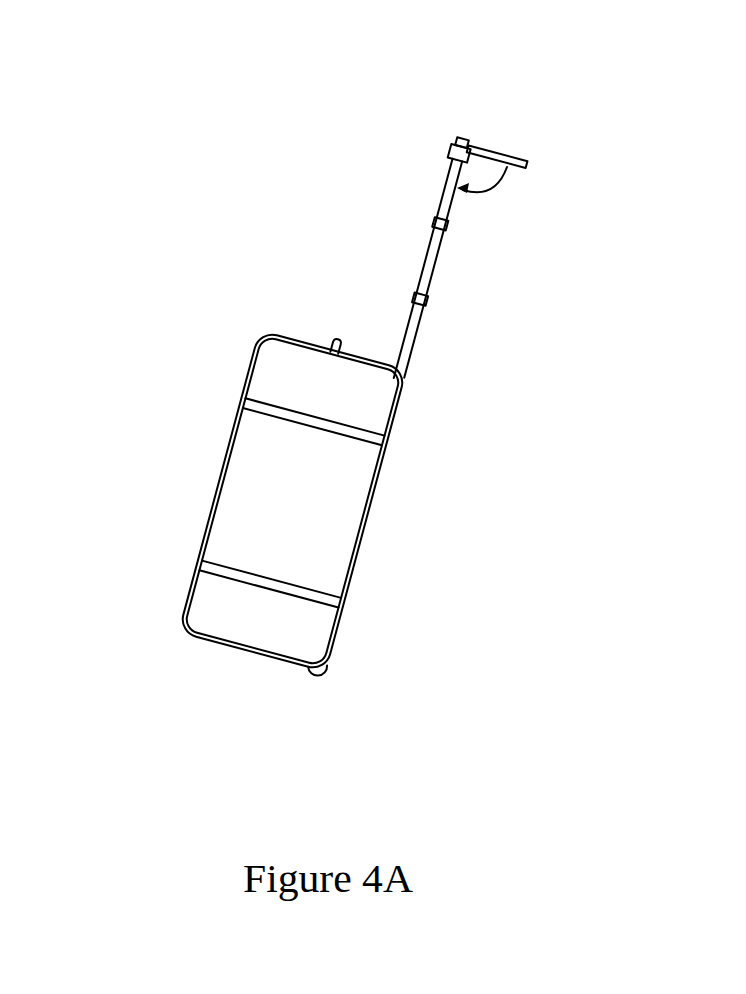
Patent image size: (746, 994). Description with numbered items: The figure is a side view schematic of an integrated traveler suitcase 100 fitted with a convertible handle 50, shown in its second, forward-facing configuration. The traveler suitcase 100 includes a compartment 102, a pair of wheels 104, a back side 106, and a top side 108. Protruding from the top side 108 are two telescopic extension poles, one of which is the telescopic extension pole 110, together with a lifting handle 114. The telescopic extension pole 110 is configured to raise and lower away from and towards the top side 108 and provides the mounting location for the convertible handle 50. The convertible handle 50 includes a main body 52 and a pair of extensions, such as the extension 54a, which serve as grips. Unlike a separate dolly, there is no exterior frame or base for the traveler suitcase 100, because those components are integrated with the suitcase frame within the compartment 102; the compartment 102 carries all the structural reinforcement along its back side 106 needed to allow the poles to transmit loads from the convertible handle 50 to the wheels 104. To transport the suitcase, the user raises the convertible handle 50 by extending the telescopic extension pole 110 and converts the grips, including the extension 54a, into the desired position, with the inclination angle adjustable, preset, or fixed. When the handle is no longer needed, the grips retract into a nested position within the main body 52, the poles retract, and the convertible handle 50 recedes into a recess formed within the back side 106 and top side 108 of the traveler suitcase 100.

The convertible handle 50 is at (522, 90).
The main body 52 is at (450, 143).
The extension 54a is at (528, 163).
The traveler suitcase 100 is at (520, 461).
The compartment 102 is at (272, 492).
The wheels 104 is at (336, 665).
The back side 106 is at (360, 540).
The top side 108 is at (303, 343).
The telescopic extension pole 110 is at (427, 280).
The lifting handle 114 is at (337, 337).